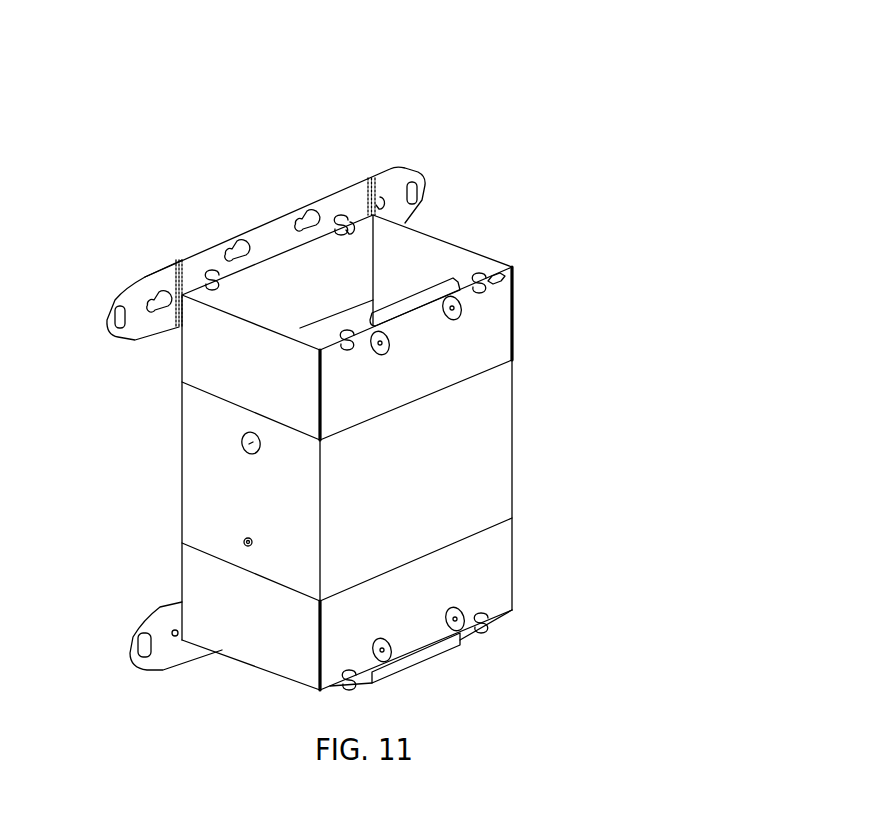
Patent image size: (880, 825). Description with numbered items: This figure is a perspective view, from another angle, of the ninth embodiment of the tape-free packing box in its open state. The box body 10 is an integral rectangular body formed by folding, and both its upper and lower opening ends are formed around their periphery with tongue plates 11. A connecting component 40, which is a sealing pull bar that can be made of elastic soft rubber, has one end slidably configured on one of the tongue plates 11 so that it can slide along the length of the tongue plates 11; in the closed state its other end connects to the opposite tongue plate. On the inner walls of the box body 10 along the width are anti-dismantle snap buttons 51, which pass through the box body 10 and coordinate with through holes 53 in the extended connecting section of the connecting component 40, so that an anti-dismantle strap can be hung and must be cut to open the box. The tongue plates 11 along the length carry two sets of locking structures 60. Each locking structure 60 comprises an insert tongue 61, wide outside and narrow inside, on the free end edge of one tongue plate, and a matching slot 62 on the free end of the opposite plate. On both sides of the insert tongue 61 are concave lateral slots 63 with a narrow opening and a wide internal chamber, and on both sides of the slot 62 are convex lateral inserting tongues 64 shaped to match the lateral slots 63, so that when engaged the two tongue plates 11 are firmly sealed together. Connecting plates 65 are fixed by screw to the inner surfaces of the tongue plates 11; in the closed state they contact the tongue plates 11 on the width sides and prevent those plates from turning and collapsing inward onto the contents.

The box body 10 is at (485, 465).
The tongue plates 11 is at (502, 332).
The connecting component 40 is at (265, 222).
The anti-dismantle snap buttons 51 is at (240, 540).
The through holes 53 is at (222, 651).
The locking structures 60 is at (345, 208).
The insert tongue 61 is at (490, 280).
The slot 62 is at (340, 222).
The lateral slots 63 is at (551, 263).
The lateral inserting tongues 64 is at (350, 222).
The connecting plates 65 is at (430, 288).